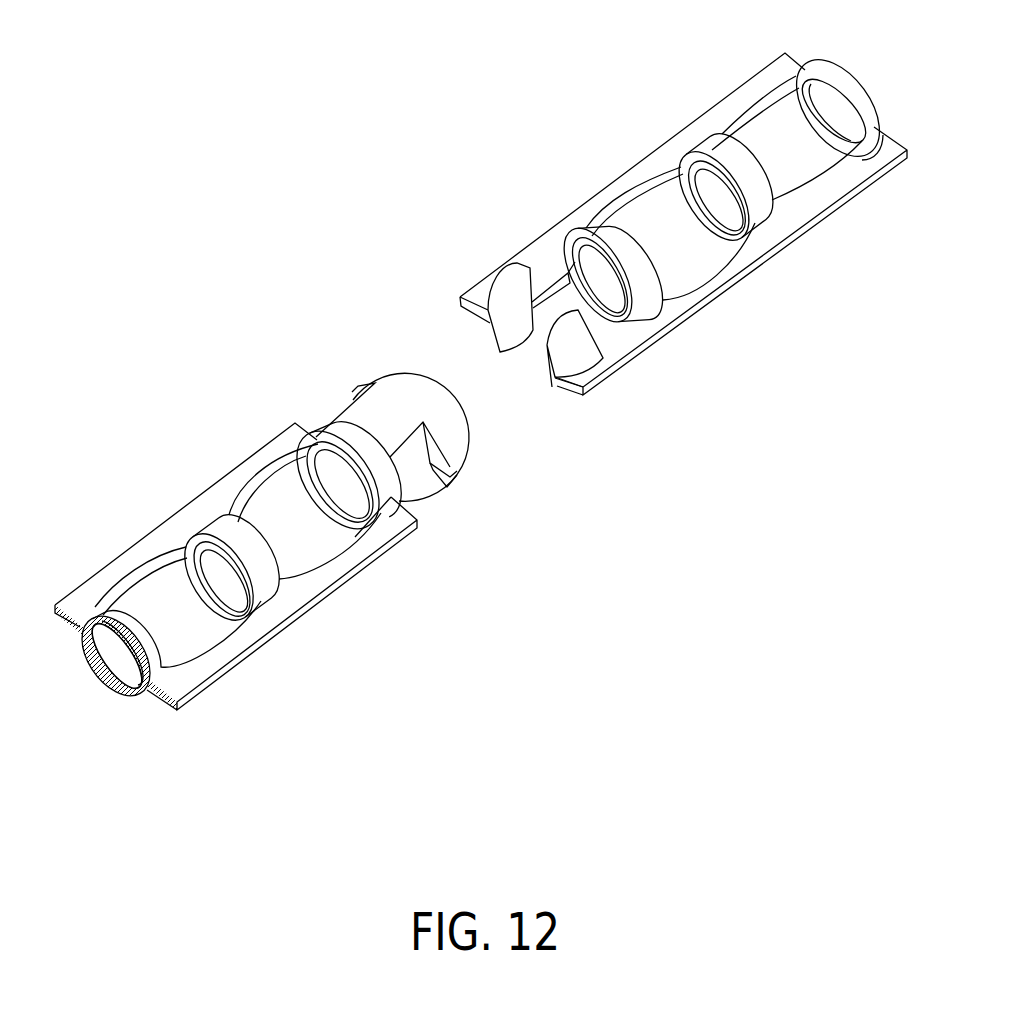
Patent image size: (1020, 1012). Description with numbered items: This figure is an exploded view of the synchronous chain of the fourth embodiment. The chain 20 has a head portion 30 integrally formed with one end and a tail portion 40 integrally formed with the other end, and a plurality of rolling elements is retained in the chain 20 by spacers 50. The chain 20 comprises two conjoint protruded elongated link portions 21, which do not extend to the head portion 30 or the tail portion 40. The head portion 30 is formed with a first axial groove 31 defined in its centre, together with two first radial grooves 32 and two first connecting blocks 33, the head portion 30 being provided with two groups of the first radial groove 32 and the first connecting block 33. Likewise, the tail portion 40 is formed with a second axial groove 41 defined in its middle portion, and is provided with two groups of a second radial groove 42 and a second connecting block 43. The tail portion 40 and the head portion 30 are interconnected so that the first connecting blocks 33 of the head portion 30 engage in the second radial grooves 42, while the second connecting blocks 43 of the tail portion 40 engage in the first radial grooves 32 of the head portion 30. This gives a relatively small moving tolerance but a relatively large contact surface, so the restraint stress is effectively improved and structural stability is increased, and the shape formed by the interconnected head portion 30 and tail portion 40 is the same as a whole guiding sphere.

The chain 20 is at (786, 318).
The protruded elongated link portions 21 is at (785, 62).
The head portion 30 is at (592, 452).
The first axial groove 31 is at (524, 378).
The first radial grooves 32 is at (550, 270).
The first connecting blocks 33 is at (515, 293).
The tail portion 40 is at (370, 345).
The second axial groove 41 is at (445, 470).
The second radial grooves 42 is at (350, 415).
The second connecting blocks 43 is at (405, 397).
The spacers 50 is at (613, 262).